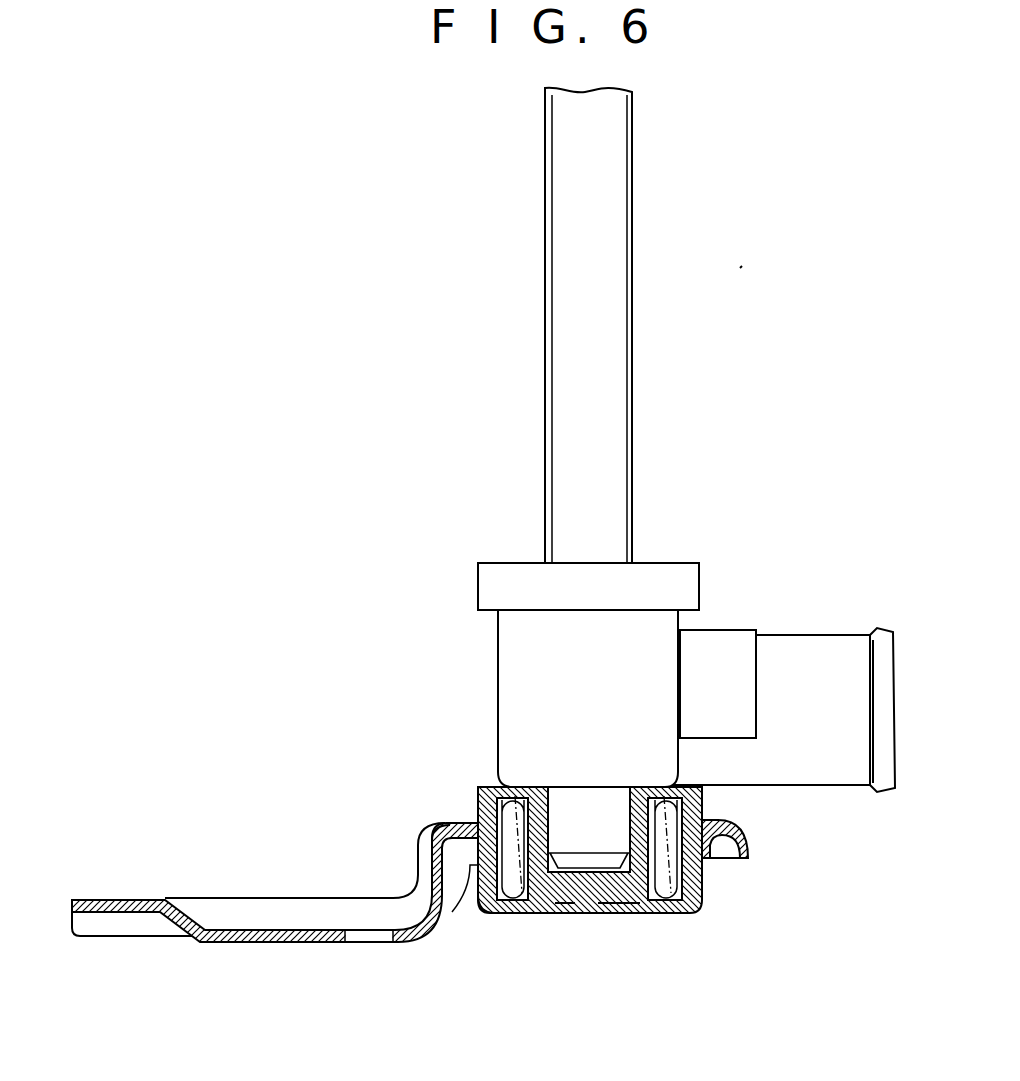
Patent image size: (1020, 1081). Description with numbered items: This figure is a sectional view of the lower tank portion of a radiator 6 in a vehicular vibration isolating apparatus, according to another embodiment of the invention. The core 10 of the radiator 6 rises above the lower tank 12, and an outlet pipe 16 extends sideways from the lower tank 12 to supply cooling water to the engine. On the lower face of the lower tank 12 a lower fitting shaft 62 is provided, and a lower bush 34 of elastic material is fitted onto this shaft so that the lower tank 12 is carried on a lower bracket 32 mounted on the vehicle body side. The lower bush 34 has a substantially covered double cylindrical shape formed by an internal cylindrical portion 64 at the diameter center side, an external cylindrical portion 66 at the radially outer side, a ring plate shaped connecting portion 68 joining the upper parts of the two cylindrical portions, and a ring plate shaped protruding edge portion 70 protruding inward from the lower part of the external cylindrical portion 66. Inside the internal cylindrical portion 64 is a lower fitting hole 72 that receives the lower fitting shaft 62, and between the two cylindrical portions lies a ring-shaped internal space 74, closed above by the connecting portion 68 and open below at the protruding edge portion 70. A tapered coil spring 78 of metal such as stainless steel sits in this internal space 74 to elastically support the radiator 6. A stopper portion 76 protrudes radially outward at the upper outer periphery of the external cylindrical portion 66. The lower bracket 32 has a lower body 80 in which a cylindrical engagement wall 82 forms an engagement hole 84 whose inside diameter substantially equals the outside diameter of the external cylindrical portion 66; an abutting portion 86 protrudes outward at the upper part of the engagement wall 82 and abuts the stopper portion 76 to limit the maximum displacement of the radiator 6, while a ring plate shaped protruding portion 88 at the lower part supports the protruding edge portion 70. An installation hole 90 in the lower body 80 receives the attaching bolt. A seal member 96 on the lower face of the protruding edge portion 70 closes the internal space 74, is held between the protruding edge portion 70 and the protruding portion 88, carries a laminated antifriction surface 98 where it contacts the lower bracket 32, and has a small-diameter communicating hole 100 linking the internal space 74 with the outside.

The radiator 6 is at (746, 262).
The core 10 is at (624, 410).
The lower tank 12 is at (528, 622).
The outlet pipe 16 is at (809, 645).
The lower bracket 32 is at (255, 883).
The lower bush 34 is at (492, 784).
The lower fitting shaft 62 is at (590, 805).
The internal cylindrical portion 64 is at (485, 800).
The external cylindrical portion 66 is at (478, 822).
The connecting portion 68 is at (684, 787).
The protruding edge portion 70 is at (520, 900).
The lower fitting hole 72 is at (633, 827).
The internal space 74 is at (664, 913).
The stopper portion 76 is at (710, 794).
The spring 78 is at (543, 905).
The lower body 80 is at (256, 944).
The engagement wall 82 is at (462, 905).
The engagement hole 84 is at (433, 838).
The abutting portion 86 is at (736, 820).
The protruding portion 88 is at (500, 908).
The installation hole 90 is at (358, 944).
The seal member 96 is at (575, 905).
The antifriction surface 98 is at (563, 917).
The communicating hole 100 is at (598, 905).